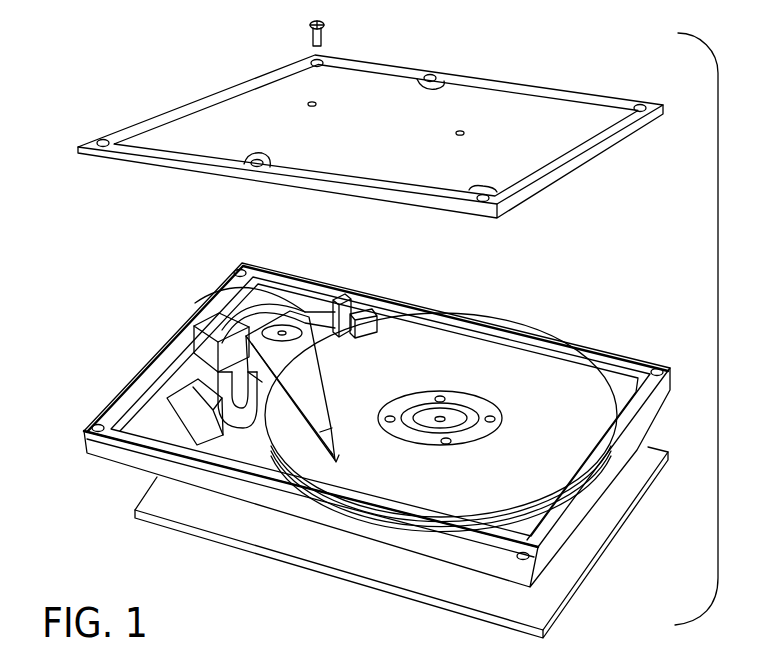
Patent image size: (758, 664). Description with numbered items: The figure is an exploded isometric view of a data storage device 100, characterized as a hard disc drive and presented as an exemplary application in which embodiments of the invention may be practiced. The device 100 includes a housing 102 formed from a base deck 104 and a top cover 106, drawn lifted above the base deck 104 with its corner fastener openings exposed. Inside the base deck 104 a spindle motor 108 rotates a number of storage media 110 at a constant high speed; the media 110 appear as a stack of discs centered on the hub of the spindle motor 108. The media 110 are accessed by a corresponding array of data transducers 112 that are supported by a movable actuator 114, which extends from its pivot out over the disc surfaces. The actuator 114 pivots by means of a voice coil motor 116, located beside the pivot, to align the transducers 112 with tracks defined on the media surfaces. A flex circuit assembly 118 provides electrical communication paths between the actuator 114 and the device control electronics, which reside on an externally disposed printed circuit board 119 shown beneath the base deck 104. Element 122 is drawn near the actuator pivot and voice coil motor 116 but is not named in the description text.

The data storage device 100 is at (134, 58).
The housing 102 is at (115, 264).
The base deck 104 is at (592, 498).
The top cover 106 is at (457, 97).
The spindle motor 108 is at (455, 415).
The storage media 110 is at (463, 518).
The data transducers 112 is at (337, 457).
The actuator 114 is at (310, 392).
The voice coil motor 116 is at (265, 302).
The flex circuit assembly 118 is at (237, 418).
The printed circuit board 119 is at (248, 547).
The actuator pivot 122 is at (257, 330).